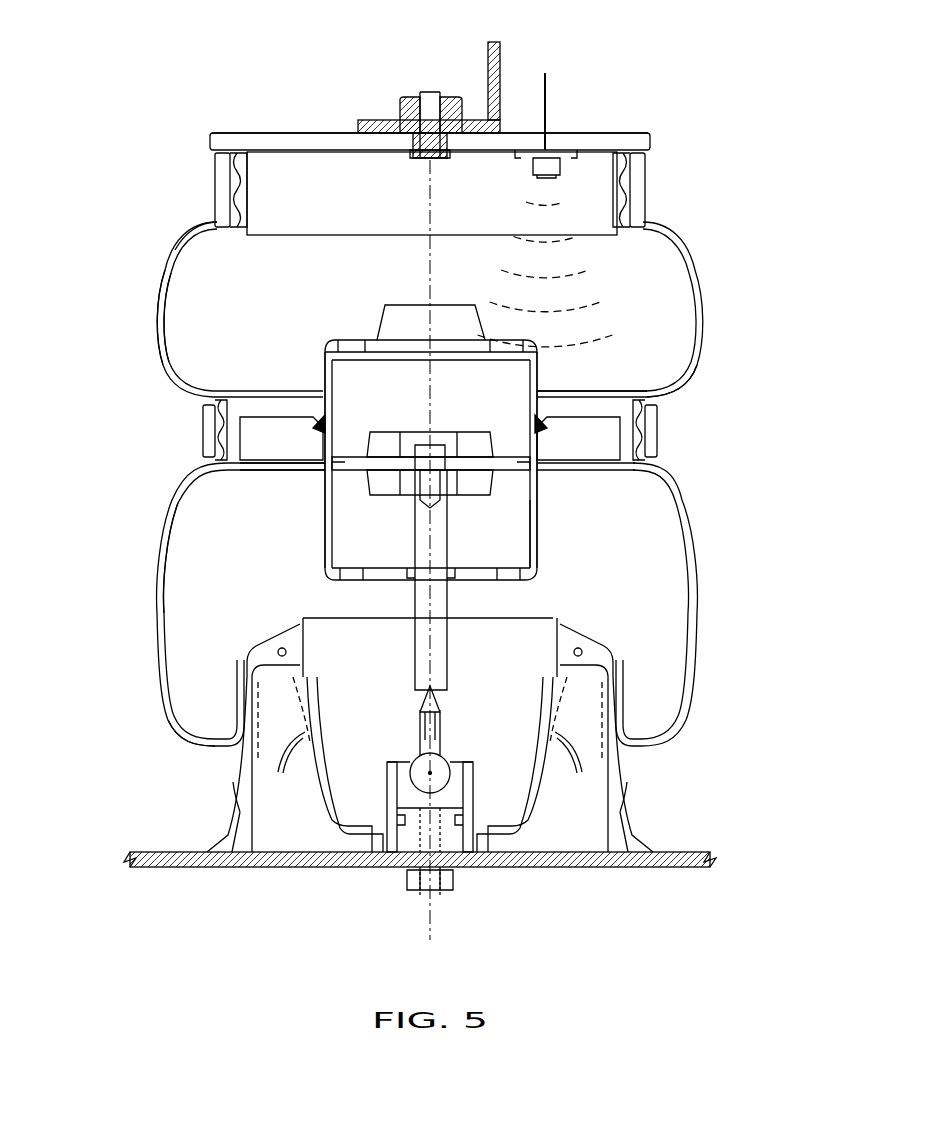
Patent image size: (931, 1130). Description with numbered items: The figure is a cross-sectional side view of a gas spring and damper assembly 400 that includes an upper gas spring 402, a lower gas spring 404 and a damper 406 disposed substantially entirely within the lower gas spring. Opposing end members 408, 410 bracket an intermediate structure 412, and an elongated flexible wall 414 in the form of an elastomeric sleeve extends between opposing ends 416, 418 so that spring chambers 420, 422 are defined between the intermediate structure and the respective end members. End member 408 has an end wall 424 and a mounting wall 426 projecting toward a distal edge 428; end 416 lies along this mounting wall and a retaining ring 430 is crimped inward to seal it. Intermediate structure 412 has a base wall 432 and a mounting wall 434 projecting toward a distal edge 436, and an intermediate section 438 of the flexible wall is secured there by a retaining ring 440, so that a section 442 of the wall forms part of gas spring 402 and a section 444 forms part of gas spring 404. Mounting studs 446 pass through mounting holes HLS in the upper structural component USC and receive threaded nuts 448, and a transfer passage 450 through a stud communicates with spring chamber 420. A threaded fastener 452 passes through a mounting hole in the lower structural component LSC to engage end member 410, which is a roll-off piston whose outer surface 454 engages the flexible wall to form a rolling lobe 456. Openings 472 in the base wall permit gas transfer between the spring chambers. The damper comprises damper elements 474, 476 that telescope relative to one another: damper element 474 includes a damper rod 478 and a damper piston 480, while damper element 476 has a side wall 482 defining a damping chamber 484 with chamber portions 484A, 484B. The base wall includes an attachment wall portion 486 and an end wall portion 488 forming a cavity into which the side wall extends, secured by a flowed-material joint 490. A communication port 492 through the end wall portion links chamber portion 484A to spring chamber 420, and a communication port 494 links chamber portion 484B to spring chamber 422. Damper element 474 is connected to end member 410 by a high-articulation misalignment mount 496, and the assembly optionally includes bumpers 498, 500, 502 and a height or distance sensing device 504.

The gas spring and damper assembly 400 is at (676, 150).
The gas spring 402 is at (712, 250).
The gas spring 404 is at (714, 546).
The damper 406 is at (550, 513).
The end member 408 is at (586, 134).
The end member 410 is at (630, 812).
The intermediate structure 412 is at (632, 385).
The flexible wall 414 is at (182, 481).
The end 416 is at (228, 248).
The end 418 is at (239, 650).
The spring chamber 420 is at (193, 288).
The spring chamber 422 is at (192, 567).
The end wall 424 is at (275, 145).
The mounting wall 426 is at (232, 166).
The distal edge 428 is at (290, 233).
The retaining ring 430 is at (218, 195).
The base wall 432 is at (580, 398).
The mounting wall 434 is at (636, 432).
The distal edge 436 is at (290, 468).
The intermediate section 438 is at (210, 432).
The retaining ring 440 is at (205, 412).
The section 442 is at (162, 322).
The section 444 is at (165, 617).
The mounting stud 446 is at (410, 98).
The threaded nut 448 is at (400, 111).
The transfer passage 450 is at (431, 94).
The threaded fastener 452 is at (453, 878).
The outer surface 454 is at (226, 822).
The rolling lobe 456 is at (200, 744).
The opening 472 is at (269, 397).
The damper element 474 is at (452, 605).
The damper element 476 is at (540, 548).
The damper rod 478 is at (442, 656).
The damper piston 480 is at (362, 466).
The side wall 482 is at (534, 484).
The damping chamber 484 is at (404, 376).
The chamber portion 484A is at (466, 414).
The chamber portion 484B is at (466, 549).
The attachment wall portion 486 is at (323, 372).
The end wall portion 488 is at (455, 340).
The flowed-material joint 490 is at (546, 432).
The communication port 492 is at (352, 340).
The communication port 494 is at (349, 582).
The high-articulation misalignment mount 496 is at (411, 760).
The bumper 498 is at (440, 282).
The bumper 500 is at (383, 440).
The bumper 502 is at (386, 492).
The height or distance sensing device 504 is at (572, 162).
The upper structural component USC is at (501, 62).
The mounting holes HLS is at (412, 135).
The lower structural component LSC is at (228, 870).